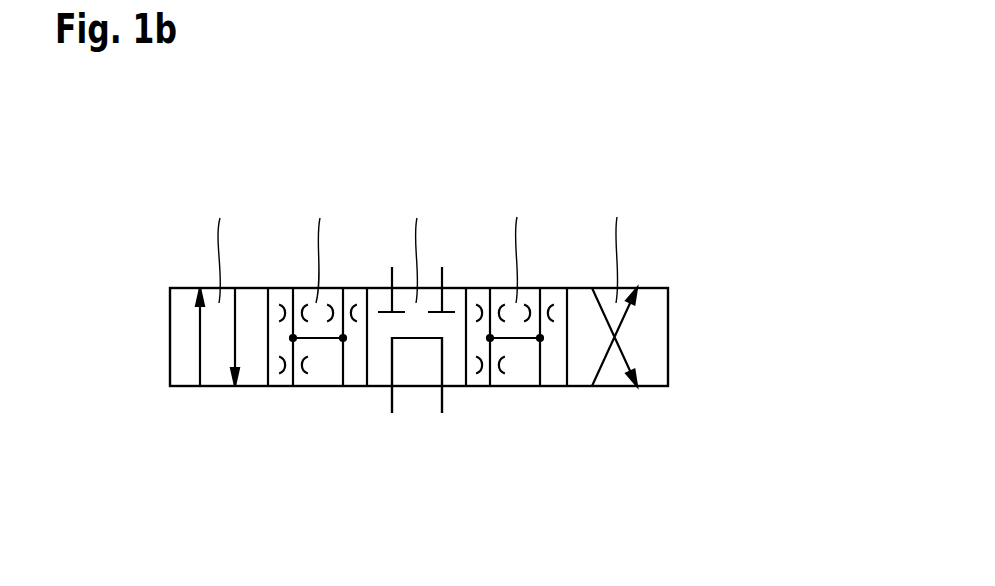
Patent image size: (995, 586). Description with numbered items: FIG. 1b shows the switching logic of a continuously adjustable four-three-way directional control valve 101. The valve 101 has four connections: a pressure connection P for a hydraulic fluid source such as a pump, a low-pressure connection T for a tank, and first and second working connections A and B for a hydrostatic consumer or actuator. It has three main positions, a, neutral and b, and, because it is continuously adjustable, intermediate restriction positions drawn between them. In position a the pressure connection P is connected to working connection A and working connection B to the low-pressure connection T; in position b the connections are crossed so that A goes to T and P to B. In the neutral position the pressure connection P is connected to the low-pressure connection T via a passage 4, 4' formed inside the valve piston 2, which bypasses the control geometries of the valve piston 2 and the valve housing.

The 4/3-way directional control valve 101 is at (700, 193).
The valve piston 2 is at (675, 280).
The passage 4 is at (416, 418).
The passage 4' is at (417, 401).